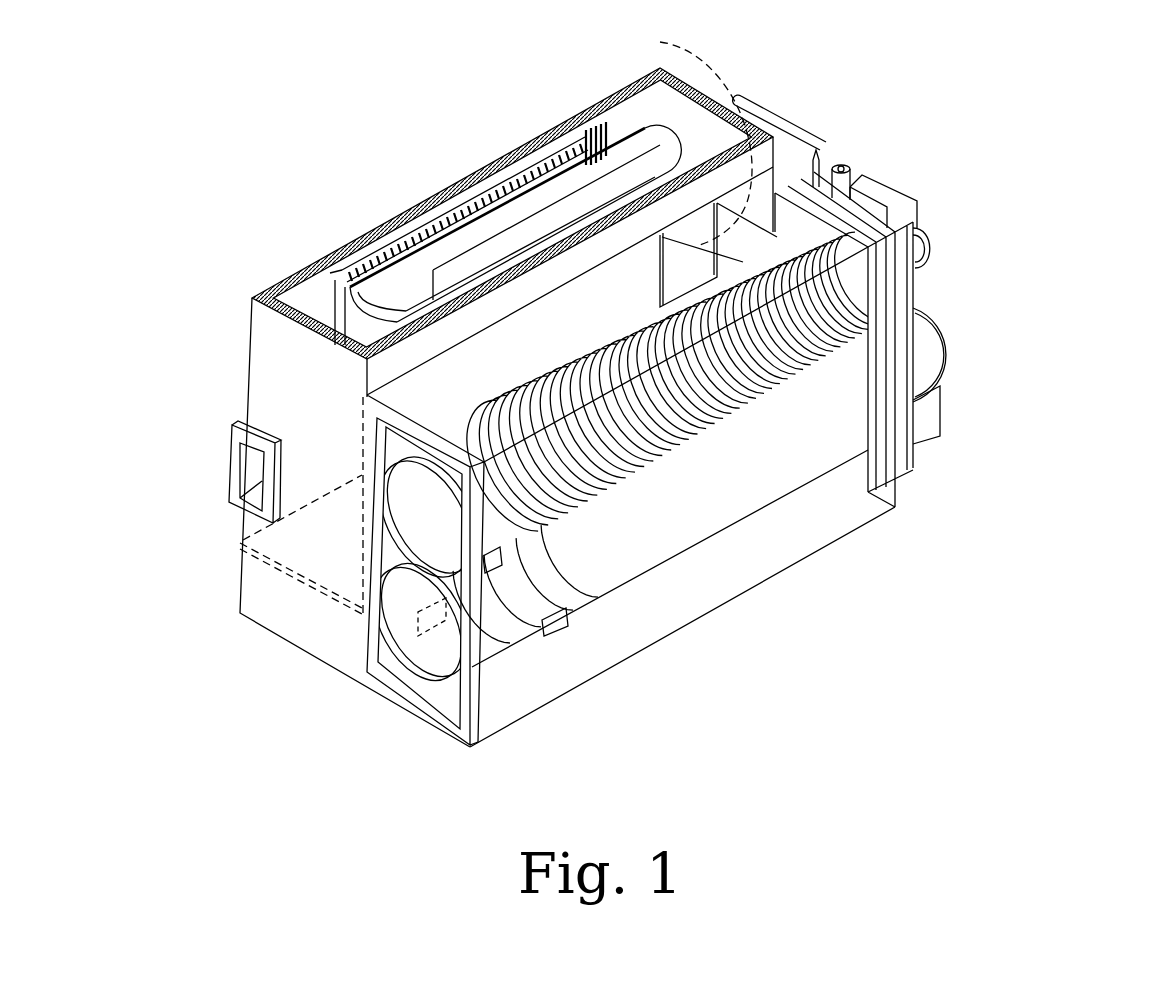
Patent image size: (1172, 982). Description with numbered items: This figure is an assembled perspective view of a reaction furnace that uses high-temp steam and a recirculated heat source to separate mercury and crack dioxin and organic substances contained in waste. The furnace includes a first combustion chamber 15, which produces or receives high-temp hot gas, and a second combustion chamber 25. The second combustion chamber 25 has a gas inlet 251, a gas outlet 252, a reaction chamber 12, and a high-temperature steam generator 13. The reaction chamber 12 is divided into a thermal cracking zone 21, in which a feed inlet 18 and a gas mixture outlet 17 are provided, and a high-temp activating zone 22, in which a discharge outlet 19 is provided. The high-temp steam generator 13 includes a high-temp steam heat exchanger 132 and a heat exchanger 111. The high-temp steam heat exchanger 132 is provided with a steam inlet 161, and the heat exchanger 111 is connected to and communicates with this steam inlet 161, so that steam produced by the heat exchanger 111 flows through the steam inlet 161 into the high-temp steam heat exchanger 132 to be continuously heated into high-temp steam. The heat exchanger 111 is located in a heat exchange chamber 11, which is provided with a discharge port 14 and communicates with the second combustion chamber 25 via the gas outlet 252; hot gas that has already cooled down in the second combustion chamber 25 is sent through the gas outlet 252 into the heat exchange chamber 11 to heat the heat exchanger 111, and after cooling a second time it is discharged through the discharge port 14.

The heat exchange chamber 11 is at (647, 117).
The reaction chamber 12 is at (669, 568).
The high-temperature steam generator 13 is at (809, 353).
The discharge port 14 is at (250, 481).
The first combustion chamber 15 is at (317, 598).
The gas mixture outlet 17 is at (843, 163).
The feed inlet 18 is at (900, 207).
The discharge outlet 19 is at (930, 360).
The thermal cracking zone 21 is at (513, 500).
The high-temp activating zone 22 is at (670, 520).
The second combustion chamber 25 is at (592, 609).
The heat exchanger 111 is at (868, 463).
The high-temp steam heat exchanger 132 is at (807, 380).
The steam inlet 161 is at (818, 156).
The gas inlet 251 is at (431, 637).
The gas outlet 252 is at (684, 136).